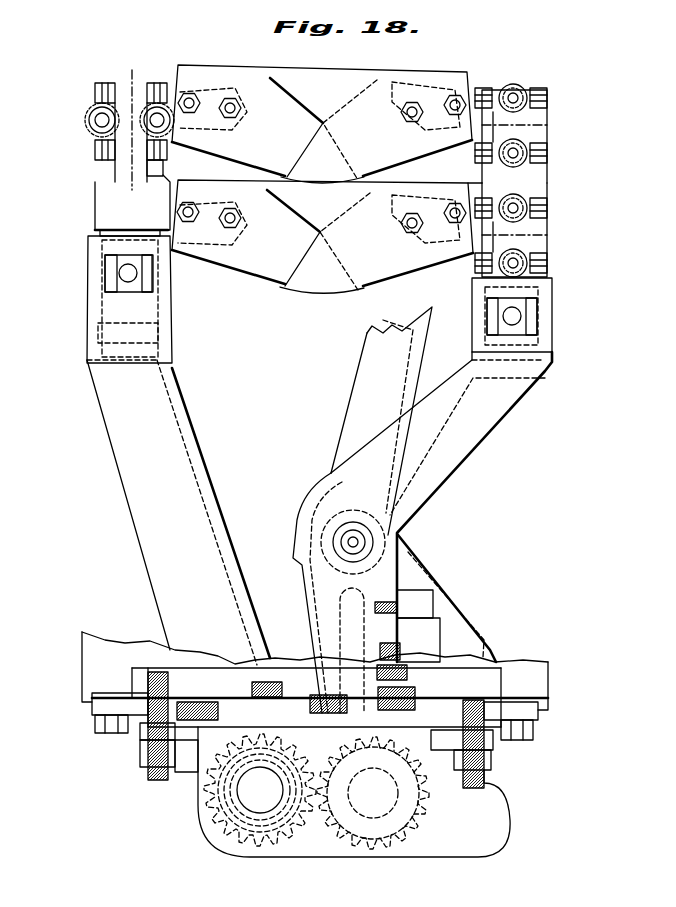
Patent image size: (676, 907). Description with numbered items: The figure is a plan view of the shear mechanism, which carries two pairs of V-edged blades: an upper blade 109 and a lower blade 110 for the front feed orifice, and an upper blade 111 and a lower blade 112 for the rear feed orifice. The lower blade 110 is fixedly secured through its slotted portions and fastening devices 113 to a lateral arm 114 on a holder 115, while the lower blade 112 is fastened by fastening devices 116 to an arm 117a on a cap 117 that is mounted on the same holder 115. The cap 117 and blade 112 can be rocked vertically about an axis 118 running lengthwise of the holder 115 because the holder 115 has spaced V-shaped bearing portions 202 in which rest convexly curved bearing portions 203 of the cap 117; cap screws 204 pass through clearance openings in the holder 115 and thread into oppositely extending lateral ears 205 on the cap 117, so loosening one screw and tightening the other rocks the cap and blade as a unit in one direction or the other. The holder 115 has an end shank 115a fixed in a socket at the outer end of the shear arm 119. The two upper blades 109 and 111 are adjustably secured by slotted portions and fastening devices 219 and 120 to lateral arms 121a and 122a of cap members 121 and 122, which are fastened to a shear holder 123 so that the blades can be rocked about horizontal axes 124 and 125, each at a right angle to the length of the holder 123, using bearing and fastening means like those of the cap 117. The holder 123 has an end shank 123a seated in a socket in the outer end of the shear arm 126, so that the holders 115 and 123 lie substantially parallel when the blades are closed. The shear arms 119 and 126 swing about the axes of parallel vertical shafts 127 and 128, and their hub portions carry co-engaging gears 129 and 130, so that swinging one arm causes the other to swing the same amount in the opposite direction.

The upper blade 109 is at (376, 267).
The lower blade 110 is at (238, 257).
The upper blade 111 is at (394, 83).
The lower blade 112 is at (265, 73).
The fastening devices 113 is at (227, 227).
The lateral arm 114 is at (220, 184).
The holder 115 is at (95, 232).
The end shank 115a is at (118, 300).
The fastening devices 116 is at (190, 96).
The cap 117 is at (140, 88).
The arm 117a is at (218, 92).
The axis 118 is at (95, 88).
The shear arm 119 is at (143, 500).
The fastening devices 120 is at (409, 100).
The cap member 121 is at (540, 228).
The lateral arm 121a is at (437, 212).
The cap member 122 is at (556, 122).
The lateral arm 122a is at (446, 68).
The shear holder 123 is at (536, 174).
The end shank 123a is at (555, 297).
The horizontal axis 124 is at (524, 238).
The horizontal axis 125 is at (543, 119).
The shear arm 126 is at (477, 435).
The vertical shaft 127 is at (252, 793).
The vertical shaft 128 is at (388, 800).
The gear 129 is at (266, 850).
The gear 130 is at (340, 850).
The V-shaped bearing portions 202 is at (113, 83).
The convexly curved bearing portions 203 is at (115, 83).
The cap screws 204 is at (88, 118).
The lateral ears 205 is at (105, 133).
The fastening devices 219 is at (446, 216).